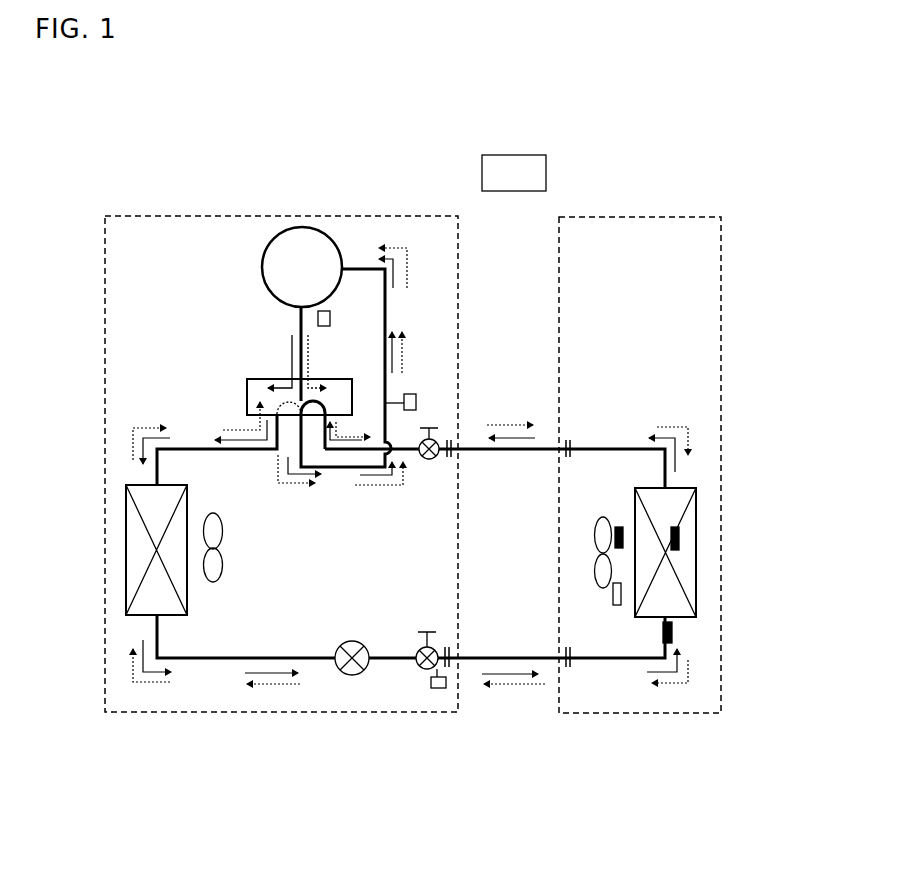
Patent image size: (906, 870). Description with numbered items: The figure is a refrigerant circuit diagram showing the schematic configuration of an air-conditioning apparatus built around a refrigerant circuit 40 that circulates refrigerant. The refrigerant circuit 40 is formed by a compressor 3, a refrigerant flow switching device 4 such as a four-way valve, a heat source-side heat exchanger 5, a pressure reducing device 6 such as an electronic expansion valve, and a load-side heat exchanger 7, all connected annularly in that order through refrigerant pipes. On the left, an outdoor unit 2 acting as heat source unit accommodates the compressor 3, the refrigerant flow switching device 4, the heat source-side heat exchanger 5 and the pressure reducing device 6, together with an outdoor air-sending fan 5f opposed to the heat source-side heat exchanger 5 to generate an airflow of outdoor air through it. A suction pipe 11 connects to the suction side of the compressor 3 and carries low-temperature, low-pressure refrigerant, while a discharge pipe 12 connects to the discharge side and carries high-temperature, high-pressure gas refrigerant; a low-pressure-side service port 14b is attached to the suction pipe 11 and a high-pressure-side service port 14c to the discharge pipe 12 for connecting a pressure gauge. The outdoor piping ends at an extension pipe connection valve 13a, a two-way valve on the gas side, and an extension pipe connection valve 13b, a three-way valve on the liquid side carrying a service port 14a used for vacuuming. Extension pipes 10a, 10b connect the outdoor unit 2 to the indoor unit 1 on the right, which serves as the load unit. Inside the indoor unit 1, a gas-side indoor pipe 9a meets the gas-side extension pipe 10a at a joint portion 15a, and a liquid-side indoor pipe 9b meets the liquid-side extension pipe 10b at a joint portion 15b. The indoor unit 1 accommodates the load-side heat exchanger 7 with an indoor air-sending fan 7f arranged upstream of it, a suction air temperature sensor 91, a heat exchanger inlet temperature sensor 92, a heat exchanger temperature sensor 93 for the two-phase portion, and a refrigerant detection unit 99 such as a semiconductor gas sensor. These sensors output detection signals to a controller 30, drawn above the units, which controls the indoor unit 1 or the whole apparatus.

The indoor unit 1 is at (657, 717).
The outdoor unit 2 is at (202, 716).
The compressor 3 is at (262, 267).
The refrigerant flow switching device 4 is at (247, 393).
The heat source-side heat exchanger 5 is at (125, 547).
The outdoor air-sending fan 5f is at (222, 540).
The pressure reducing device 6 is at (352, 641).
The load-side heat exchanger 7 is at (696, 583).
The indoor air-sending fan 7f is at (596, 522).
The gas-side indoor pipe 9a is at (601, 448).
The liquid-side indoor pipe 9b is at (623, 661).
The gas-side extension pipe 10a is at (470, 447).
The liquid-side extension pipe 10b is at (494, 657).
The suction pipe 11 is at (360, 268).
The discharge pipe 12 is at (299, 323).
The extension pipe connection valve 13a is at (437, 457).
The extension pipe connection valve 13b is at (419, 665).
The service port 14a is at (437, 688).
The low-pressure-side service port 14b is at (408, 394).
The high-pressure-side service port 14c is at (331, 318).
The joint portion 15a is at (568, 440).
The joint portion 15b is at (566, 665).
The controller 30 is at (546, 178).
The refrigerant circuit 40 is at (210, 660).
The suction air temperature sensor 91 is at (619, 526).
The heat exchanger inlet temperature sensor 92 is at (673, 633).
The heat exchanger temperature sensor 93 is at (680, 532).
The refrigerant detection unit 99 is at (617, 606).